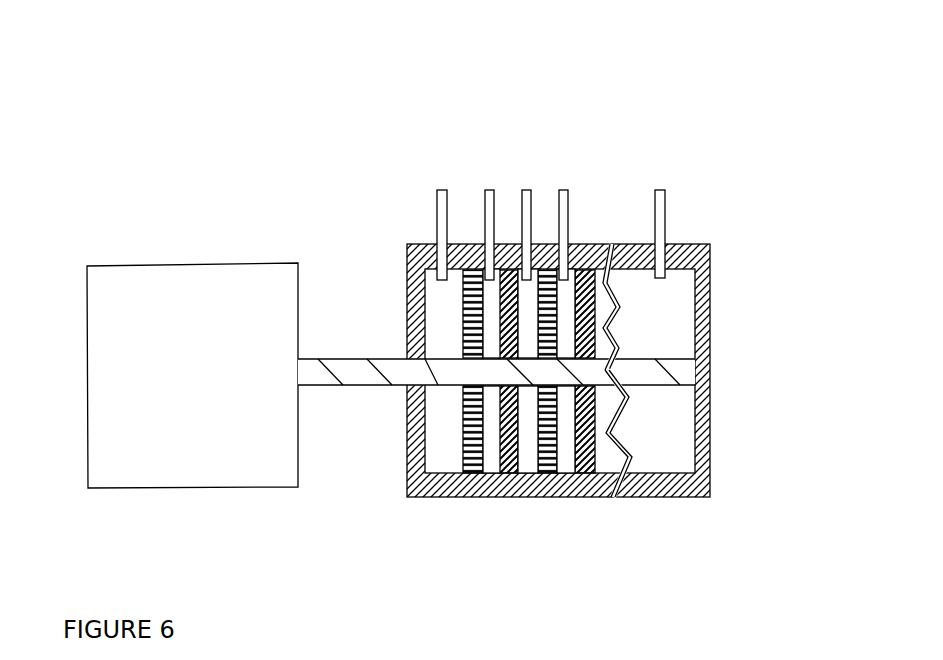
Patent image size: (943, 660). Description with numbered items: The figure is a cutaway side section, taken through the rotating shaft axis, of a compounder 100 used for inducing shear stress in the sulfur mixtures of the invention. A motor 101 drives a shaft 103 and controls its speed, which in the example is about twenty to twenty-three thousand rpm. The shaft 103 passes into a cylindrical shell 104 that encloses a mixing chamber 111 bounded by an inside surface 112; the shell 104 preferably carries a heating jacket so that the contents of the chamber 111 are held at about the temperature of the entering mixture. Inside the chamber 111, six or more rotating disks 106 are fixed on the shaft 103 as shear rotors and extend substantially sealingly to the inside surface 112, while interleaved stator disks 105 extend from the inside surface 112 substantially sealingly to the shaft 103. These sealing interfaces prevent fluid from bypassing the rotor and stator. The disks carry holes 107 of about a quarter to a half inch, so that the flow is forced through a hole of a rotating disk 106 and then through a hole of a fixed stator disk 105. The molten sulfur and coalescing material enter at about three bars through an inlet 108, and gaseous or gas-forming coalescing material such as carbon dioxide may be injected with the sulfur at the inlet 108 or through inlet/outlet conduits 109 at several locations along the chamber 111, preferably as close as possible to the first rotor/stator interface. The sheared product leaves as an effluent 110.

The compounder 100 is at (350, 258).
The motor 101 is at (118, 285).
The shaft 103 is at (342, 384).
The shell 104 is at (662, 500).
The stator disks 105 is at (514, 478).
The rotating disks 106 is at (550, 459).
The holes 107 is at (466, 337).
The inlet 108 is at (441, 189).
The inlet/outlet conduits 109 is at (563, 189).
The effluent 110 is at (660, 189).
The mixing chamber 111 is at (680, 323).
The inside surface 112 is at (658, 472).